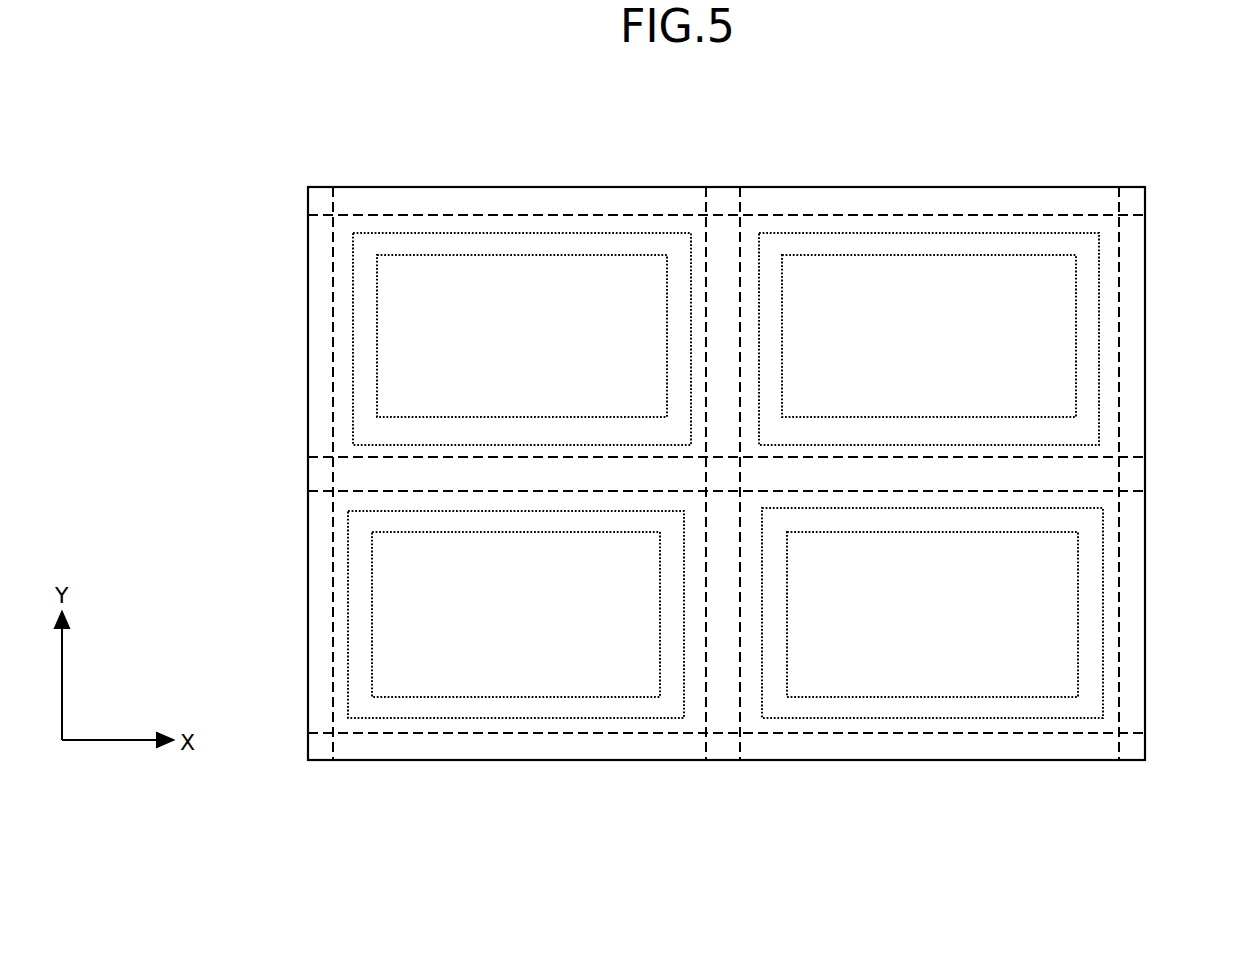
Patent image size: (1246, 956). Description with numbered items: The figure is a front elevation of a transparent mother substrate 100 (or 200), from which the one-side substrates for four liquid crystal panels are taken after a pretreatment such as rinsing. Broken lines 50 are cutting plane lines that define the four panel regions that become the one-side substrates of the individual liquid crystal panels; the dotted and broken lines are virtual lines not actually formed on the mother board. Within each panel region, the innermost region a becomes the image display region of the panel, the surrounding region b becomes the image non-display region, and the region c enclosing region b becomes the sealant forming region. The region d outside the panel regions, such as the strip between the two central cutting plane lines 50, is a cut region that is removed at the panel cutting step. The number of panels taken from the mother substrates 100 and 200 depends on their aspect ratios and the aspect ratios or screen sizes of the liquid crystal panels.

The mother substrate 100 is at (688, 417).
The mother substrate 200 is at (726, 473).
The cutting plane lines 50 is at (316, 215).
The image display regions a is at (506, 268).
The image non-display regions b is at (665, 243).
The sealant forming regions c is at (429, 222).
The cut regions d is at (723, 200).